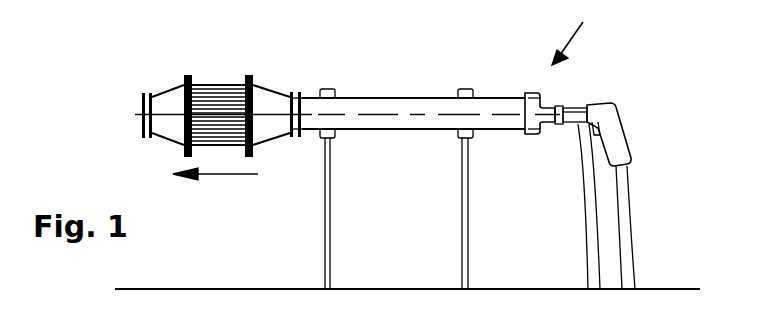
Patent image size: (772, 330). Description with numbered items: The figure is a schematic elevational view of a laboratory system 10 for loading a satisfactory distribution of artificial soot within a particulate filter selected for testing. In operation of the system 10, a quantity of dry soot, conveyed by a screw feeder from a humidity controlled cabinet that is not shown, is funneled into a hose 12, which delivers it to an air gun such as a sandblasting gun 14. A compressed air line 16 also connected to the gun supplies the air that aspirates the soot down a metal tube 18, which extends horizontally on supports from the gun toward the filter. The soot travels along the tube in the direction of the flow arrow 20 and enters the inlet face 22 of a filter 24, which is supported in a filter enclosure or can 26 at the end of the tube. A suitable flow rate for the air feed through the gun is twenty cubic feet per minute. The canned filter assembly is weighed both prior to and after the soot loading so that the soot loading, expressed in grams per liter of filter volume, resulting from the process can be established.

The system 10 is at (580, 37).
The hose 12 is at (588, 168).
The sandblasting gun 14 is at (616, 101).
The compressed air line 16 is at (633, 187).
The metal tube 18 is at (416, 97).
The flow arrow 20 is at (232, 175).
The inlet face 22 is at (229, 87).
The filter 24 is at (212, 92).
The filter enclosure or can 26 is at (270, 133).